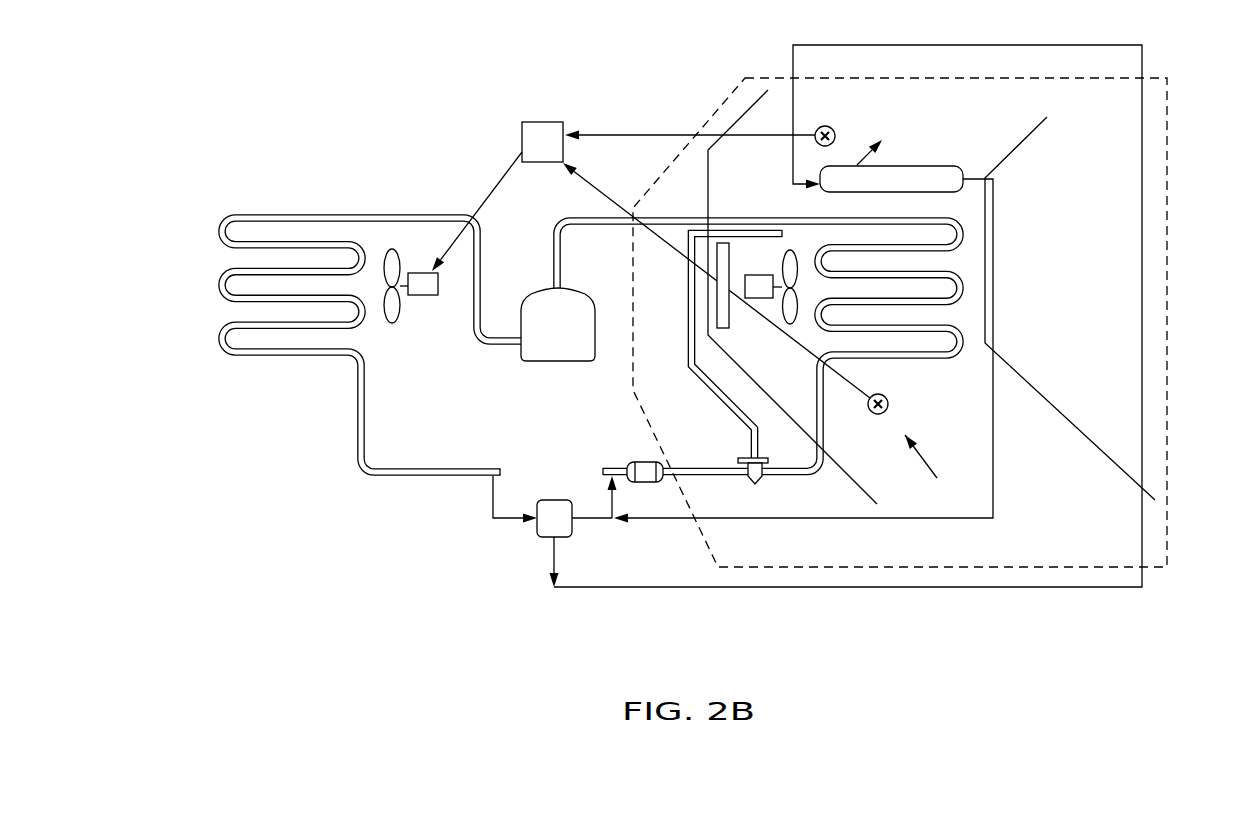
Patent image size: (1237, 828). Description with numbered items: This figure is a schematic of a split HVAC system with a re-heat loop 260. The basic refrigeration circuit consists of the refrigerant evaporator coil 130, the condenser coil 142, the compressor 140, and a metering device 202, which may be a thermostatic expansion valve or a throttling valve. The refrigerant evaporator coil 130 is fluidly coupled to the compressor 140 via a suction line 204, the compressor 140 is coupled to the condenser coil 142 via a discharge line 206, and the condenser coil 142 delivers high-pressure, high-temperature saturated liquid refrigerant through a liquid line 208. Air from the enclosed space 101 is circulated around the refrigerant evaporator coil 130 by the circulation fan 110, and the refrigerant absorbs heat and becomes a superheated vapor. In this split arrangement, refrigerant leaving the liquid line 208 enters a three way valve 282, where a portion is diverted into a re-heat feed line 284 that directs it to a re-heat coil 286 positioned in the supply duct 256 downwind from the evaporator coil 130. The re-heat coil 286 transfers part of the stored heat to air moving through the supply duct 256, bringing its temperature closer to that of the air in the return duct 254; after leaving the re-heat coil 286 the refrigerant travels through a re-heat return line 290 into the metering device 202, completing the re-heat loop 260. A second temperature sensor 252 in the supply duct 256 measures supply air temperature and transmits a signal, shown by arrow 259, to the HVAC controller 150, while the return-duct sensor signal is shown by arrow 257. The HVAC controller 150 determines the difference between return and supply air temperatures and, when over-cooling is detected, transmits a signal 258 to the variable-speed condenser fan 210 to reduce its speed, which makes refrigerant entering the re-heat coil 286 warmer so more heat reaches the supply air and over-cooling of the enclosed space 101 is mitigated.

The HVAC controller 150 is at (522, 127).
The signal 258 is at (493, 190).
The arrow 259 is at (640, 133).
The second temperature sensor 252 is at (835, 129).
The supply duct 256 is at (1013, 151).
The discharge line 206 is at (483, 226).
The suction line 204 is at (588, 227).
The arrow 257 is at (673, 253).
The re-heat coil 286 is at (968, 200).
The circulation fan 110 is at (760, 298).
The variable-speed condenser fan 210 is at (427, 295).
The condenser coil 142 is at (282, 355).
The compressor 140 is at (553, 362).
The refrigerant evaporator coil 130 is at (937, 358).
The enclosed space 101 is at (1168, 318).
The liquid line 208 is at (483, 476).
The three way valve 282 is at (521, 544).
The metering device 202 is at (757, 484).
The return duct 254 is at (867, 498).
The re-heat loop 260 is at (876, 414).
The re-heat return line 290 is at (993, 442).
The re-heat feed line 284 is at (853, 590).